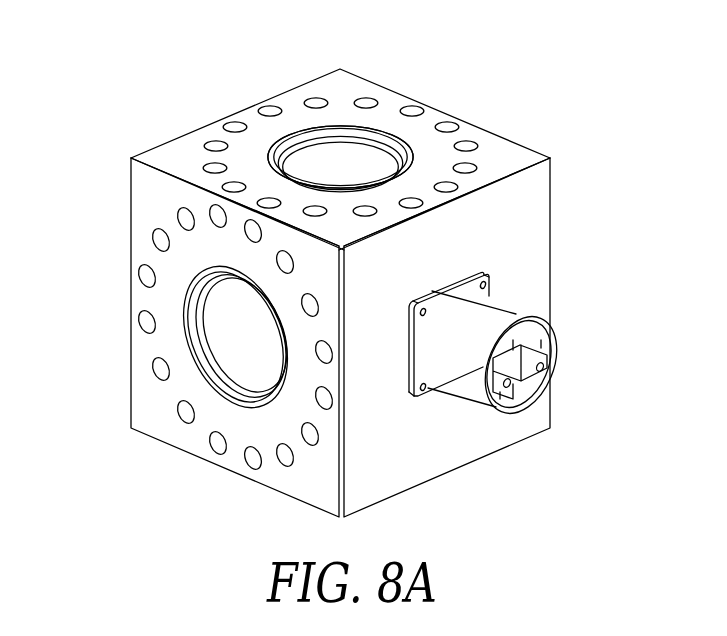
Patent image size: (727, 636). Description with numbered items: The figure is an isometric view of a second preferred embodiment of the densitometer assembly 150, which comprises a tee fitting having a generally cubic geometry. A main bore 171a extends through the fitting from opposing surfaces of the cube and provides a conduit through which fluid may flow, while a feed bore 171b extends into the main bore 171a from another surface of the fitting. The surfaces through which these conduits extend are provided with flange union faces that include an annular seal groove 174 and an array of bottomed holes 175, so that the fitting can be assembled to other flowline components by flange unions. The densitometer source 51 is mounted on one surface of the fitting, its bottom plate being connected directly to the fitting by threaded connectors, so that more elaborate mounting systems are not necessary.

The densitometer assembly 150 is at (129, 119).
The annular seal groove 174 is at (298, 135).
The feed bore 171b is at (362, 155).
The bottomed holes 175 is at (465, 147).
The densitometer source 51 is at (498, 318).
The main bore 171a is at (237, 339).